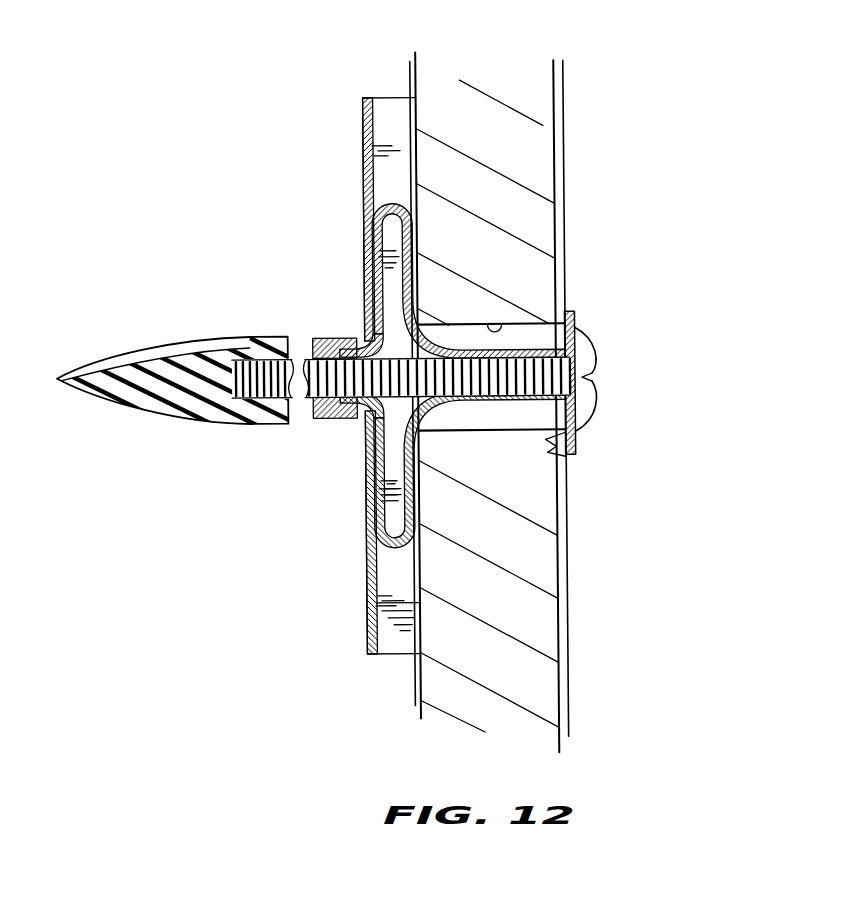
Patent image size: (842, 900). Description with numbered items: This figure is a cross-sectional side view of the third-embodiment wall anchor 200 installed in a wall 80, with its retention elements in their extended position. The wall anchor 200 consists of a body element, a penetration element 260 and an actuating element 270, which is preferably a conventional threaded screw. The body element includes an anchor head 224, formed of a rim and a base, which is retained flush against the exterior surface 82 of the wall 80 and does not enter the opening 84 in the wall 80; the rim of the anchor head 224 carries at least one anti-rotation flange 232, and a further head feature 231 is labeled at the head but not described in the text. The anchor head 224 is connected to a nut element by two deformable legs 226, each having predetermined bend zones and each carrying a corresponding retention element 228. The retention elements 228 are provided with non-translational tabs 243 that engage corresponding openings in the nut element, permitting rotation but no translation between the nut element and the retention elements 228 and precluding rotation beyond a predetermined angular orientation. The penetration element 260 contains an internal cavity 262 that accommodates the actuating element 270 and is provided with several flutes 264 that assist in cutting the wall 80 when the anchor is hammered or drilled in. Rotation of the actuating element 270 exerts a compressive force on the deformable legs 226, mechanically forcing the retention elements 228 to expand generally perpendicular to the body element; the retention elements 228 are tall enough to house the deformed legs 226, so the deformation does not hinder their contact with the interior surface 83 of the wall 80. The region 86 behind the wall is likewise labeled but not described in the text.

The wall 80 is at (508, 402).
The exterior surface 82 is at (568, 607).
The interior surface 83 is at (410, 660).
The opening 84 is at (510, 327).
The cavity behind wall 86 is at (272, 653).
The wall anchor 200 is at (440, 375).
The anchor head 224 is at (600, 308).
The deformable legs 226 is at (452, 338).
The retention elements 228 is at (360, 190).
The recess in head 231 is at (584, 378).
The anti-rotation flange 232 is at (578, 452).
The non-translational tabs 243 is at (357, 347).
The penetration element 260 is at (175, 375).
The internal cavity 262 is at (217, 398).
The flutes 264 is at (130, 378).
The actuating element 270 is at (618, 362).